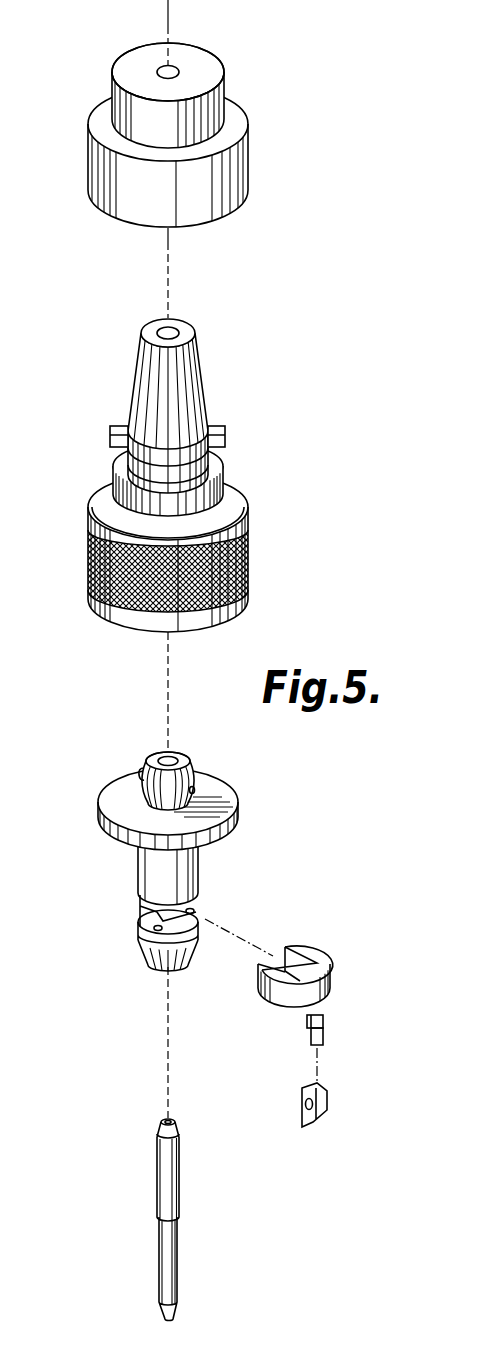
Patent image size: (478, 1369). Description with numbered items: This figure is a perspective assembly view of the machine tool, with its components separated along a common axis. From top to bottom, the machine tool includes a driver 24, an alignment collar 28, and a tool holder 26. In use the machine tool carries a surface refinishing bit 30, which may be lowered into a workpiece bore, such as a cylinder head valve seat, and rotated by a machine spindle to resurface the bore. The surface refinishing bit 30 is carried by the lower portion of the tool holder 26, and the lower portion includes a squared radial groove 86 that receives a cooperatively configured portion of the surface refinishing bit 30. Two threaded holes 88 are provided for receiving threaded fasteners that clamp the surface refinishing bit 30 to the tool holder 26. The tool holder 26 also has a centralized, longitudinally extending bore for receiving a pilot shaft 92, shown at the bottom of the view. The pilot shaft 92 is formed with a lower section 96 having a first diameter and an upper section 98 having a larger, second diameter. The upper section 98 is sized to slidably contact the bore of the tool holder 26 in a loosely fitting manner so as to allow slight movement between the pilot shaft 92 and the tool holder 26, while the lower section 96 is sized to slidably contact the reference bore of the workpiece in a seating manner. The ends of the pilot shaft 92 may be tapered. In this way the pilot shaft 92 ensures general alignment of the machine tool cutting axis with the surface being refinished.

The driver 24 is at (105, 377).
The alignment collar 28 is at (90, 540).
The tool holder 26 is at (148, 861).
The squared radial groove 86 is at (196, 912).
The threaded holes 88 is at (154, 929).
The surface refinishing bit 30 is at (335, 935).
The pilot shaft 92 is at (144, 1220).
The upper section 98 is at (182, 1172).
The lower section 96 is at (178, 1258).